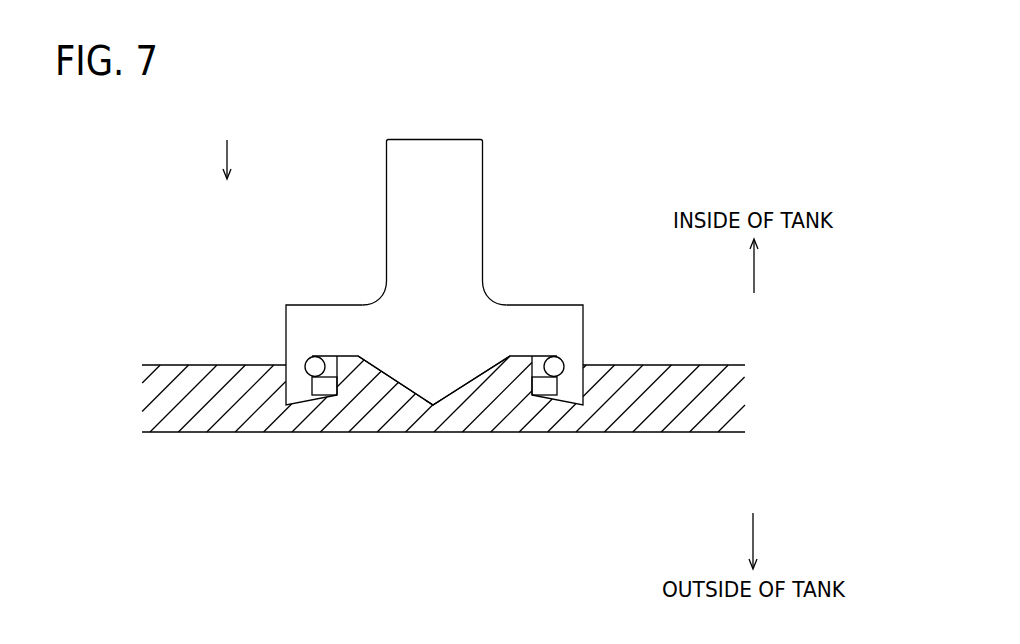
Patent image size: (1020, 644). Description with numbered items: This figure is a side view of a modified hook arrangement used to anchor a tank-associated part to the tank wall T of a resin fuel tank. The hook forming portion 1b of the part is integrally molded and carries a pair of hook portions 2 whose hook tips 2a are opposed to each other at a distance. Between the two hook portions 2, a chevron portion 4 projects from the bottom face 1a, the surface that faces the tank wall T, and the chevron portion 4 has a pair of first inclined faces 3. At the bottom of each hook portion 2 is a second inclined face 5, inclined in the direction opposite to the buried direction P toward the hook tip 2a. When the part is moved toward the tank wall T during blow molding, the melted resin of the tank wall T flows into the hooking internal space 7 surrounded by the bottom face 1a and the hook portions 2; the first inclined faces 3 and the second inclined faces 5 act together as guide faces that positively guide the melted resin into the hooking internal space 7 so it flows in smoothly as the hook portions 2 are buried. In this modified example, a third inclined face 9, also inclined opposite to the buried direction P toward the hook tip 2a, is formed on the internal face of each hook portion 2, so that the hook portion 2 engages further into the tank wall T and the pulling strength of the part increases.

The bottom face 1a is at (531, 357).
The hook forming portion 1b is at (468, 173).
The hook portion 2 is at (307, 388).
The hook tip 2a is at (350, 388).
The first inclined face 3 is at (407, 390).
The chevron portion 4 is at (433, 385).
The second inclined face 5 is at (323, 400).
The hooking internal space 7 is at (312, 360).
The third inclined face 9 is at (312, 378).
The tank wall T is at (710, 375).
The buried direction P is at (227, 146).